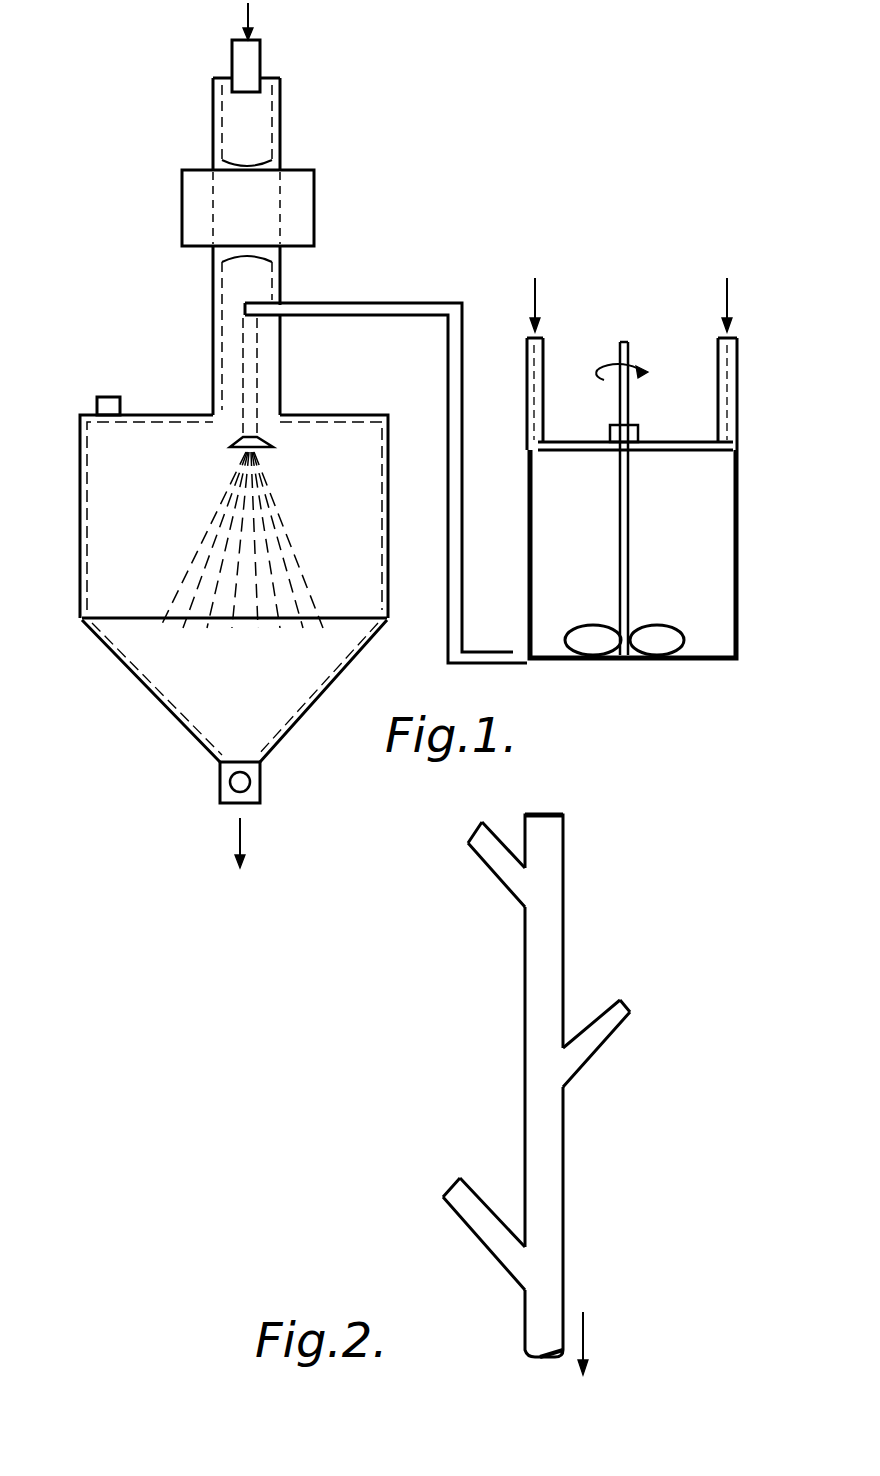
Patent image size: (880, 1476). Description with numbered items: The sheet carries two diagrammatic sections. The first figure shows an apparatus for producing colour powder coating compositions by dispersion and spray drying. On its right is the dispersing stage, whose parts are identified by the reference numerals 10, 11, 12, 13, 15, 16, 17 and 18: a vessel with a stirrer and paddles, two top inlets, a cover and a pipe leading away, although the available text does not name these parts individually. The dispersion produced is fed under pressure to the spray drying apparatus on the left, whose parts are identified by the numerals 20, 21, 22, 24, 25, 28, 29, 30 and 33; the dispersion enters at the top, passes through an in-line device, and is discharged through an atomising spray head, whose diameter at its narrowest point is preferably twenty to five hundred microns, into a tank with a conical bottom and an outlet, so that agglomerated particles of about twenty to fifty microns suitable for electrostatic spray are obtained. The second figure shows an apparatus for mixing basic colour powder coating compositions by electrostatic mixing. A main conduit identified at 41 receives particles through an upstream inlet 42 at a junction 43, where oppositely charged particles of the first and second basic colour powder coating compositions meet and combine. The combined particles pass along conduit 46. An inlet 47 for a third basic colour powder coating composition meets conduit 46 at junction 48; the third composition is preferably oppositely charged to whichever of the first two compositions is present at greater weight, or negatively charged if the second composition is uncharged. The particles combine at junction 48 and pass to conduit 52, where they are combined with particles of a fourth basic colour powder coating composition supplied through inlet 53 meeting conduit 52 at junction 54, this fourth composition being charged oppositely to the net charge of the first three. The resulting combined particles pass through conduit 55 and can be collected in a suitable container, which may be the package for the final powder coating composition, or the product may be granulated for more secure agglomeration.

In FIG. 1, the mixing vessel assembly / feed inlet 10 is at (580, 668).
In FIG. 1, the stirrer paddles 11 is at (657, 644).
In FIG. 1, the stirrer shaft 12 is at (628, 530).
In FIG. 1, the mixing vessel 13 is at (738, 588).
In FIG. 1, the first inlet pipe 15 is at (527, 392).
In FIG. 1, the second inlet pipe 16 is at (737, 360).
In FIG. 1, the cover plate 17 is at (737, 447).
In FIG. 1, the feed pipe 18 is at (453, 625).
In FIG. 1, the conical bottom of collecting tank 20 is at (137, 682).
In FIG. 1, the collecting tank wall 21 is at (80, 592).
In FIG. 1, the spray nozzle 22 is at (230, 445).
In FIG. 1, the outlet valve housing 24 is at (258, 800).
In FIG. 1, the valve 25 is at (232, 784).
In FIG. 1, the gas inlet tube 28 is at (250, 60).
In FIG. 1, the pump / metering device 29 is at (302, 180).
In FIG. 1, the vent fitting 30 is at (108, 397).
In FIG. 1, the nozzle feed tube 33 is at (227, 280).
In FIG. 2, the main conduit 41 is at (557, 843).
In FIG. 2, the first branch conduit 42 is at (491, 862).
In FIG. 2, the first junction 43 is at (520, 888).
In FIG. 2, the conduit 46 is at (542, 1028).
In FIG. 2, the inlet 47 is at (602, 1036).
In FIG. 2, the junction 48 is at (545, 1077).
In FIG. 2, the conduit 52 is at (557, 1187).
In FIG. 2, the inlet 53 is at (483, 1230).
In FIG. 2, the junction 54 is at (548, 1263).
In FIG. 2, the conduit 55 is at (537, 1310).